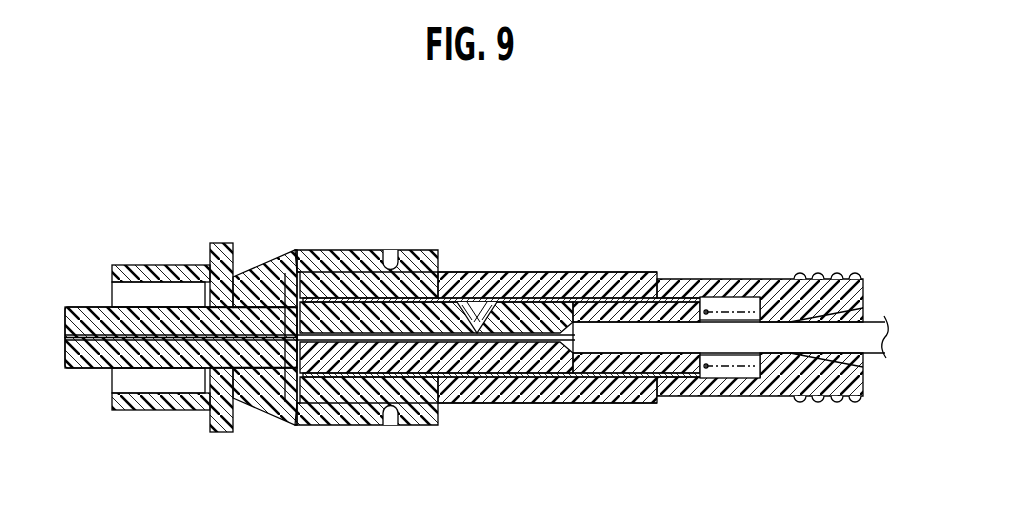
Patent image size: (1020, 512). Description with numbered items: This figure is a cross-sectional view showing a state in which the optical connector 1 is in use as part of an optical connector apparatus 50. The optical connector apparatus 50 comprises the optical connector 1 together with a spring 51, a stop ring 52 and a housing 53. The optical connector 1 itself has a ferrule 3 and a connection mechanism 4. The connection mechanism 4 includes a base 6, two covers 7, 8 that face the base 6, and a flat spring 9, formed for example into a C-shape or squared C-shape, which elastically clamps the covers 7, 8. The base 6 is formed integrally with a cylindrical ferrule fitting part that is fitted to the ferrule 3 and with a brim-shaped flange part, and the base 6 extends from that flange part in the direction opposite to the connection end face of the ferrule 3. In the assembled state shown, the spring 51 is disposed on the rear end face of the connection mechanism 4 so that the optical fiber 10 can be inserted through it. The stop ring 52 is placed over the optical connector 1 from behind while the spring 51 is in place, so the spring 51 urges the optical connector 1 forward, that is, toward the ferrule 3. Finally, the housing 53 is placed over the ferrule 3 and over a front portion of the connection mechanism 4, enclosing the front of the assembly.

The optical connector apparatus 50 is at (512, 218).
The housing 53 is at (162, 266).
The ferrule 3 is at (170, 362).
The cover 7 is at (355, 305).
The optical connector 1 is at (450, 312).
The connection mechanism 4 is at (462, 318).
The flat spring 9 is at (540, 298).
The stop ring 52 is at (588, 290).
The cover 8 is at (650, 308).
The spring 51 is at (735, 310).
The base 6 is at (508, 363).
The optical fiber 10 is at (668, 345).